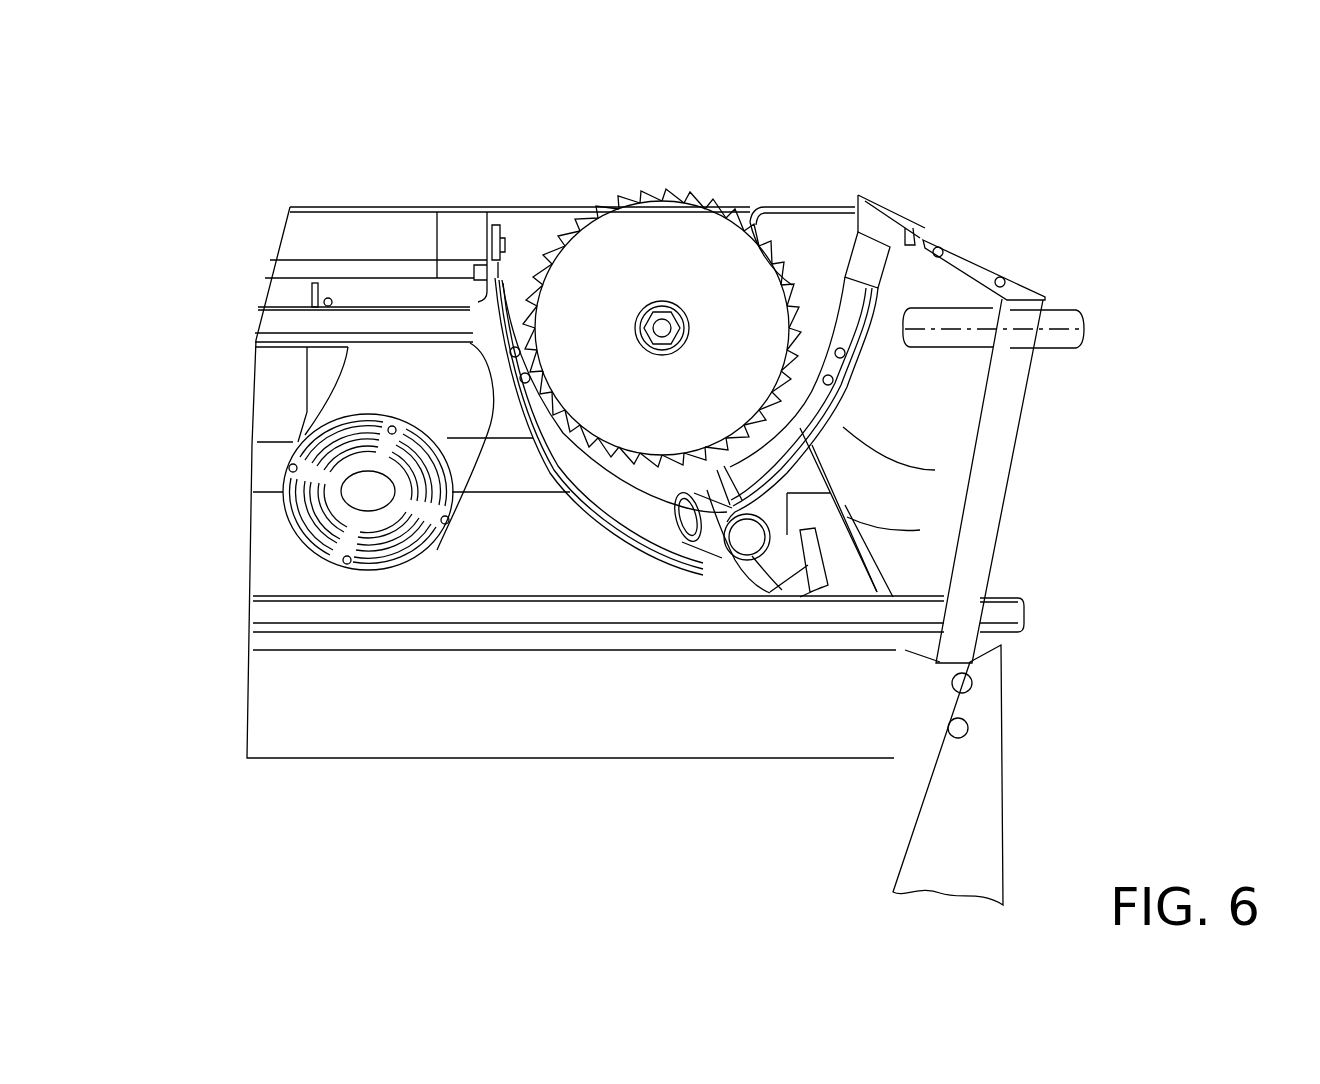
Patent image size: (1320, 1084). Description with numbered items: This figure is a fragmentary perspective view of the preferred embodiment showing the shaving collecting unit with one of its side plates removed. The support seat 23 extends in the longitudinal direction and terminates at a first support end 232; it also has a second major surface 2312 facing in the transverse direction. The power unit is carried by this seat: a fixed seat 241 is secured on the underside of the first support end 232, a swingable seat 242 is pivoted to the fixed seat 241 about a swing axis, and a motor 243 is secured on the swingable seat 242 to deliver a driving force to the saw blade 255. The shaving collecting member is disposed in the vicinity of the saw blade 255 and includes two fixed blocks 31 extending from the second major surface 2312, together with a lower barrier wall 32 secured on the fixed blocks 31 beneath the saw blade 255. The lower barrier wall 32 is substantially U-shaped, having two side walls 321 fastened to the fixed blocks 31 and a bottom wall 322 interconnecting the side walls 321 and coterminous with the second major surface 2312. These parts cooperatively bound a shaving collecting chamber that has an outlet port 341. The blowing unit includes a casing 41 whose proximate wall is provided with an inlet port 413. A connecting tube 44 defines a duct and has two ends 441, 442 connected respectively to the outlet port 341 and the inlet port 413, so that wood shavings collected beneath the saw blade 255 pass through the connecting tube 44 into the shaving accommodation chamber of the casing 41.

The first support end 232 is at (318, 207).
The support seat 23 is at (487, 210).
The saw blade 255 is at (640, 217).
The second major surface 2312 is at (820, 242).
The fixed blocks 31 is at (445, 287).
The fixed seat 241 is at (334, 285).
The swingable seat 242 is at (317, 363).
The motor 243 is at (313, 415).
The lower barrier wall 32 is at (830, 427).
The side walls 321 is at (833, 433).
The outlet port 341 is at (827, 495).
The end of connecting tube 441 is at (687, 525).
The connecting tube 44 is at (703, 548).
The bottom wall 322 is at (742, 560).
The casing 41 is at (758, 548).
The end of connecting tube 442 is at (817, 565).
The inlet port 413 is at (902, 776).